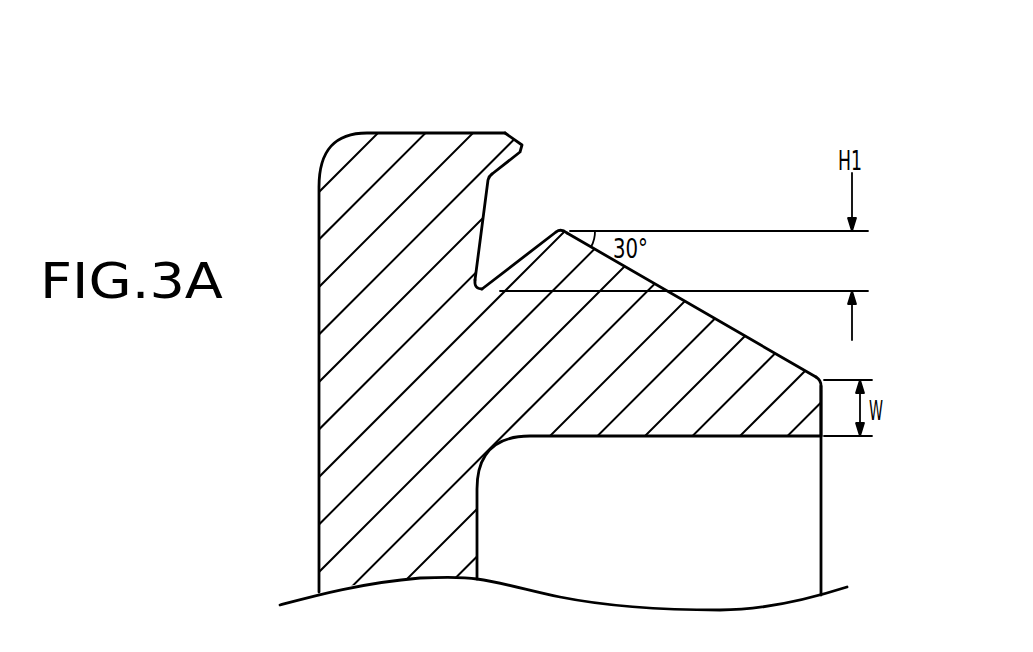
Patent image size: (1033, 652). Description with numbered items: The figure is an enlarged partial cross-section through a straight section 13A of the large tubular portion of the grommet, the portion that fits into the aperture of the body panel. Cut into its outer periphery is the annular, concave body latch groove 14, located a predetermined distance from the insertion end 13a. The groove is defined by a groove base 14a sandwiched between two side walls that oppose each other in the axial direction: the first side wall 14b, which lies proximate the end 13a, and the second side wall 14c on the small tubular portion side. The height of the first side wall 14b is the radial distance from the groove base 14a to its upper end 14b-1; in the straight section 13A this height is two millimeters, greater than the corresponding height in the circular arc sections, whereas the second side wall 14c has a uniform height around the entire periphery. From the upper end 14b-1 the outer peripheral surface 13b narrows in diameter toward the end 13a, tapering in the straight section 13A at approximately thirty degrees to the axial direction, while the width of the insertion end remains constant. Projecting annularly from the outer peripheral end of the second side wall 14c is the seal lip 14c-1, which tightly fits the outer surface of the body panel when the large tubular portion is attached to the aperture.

The straight section 13A is at (604, 223).
The end 13a is at (822, 415).
The outer peripheral surface 13b is at (760, 344).
The body latch groove 14 is at (677, 55).
The groove base 14a is at (485, 277).
The first side wall 14b is at (530, 247).
The upper end 14b-1 is at (560, 227).
The second side wall 14c is at (488, 195).
The seal lip 14c-1 is at (523, 140).